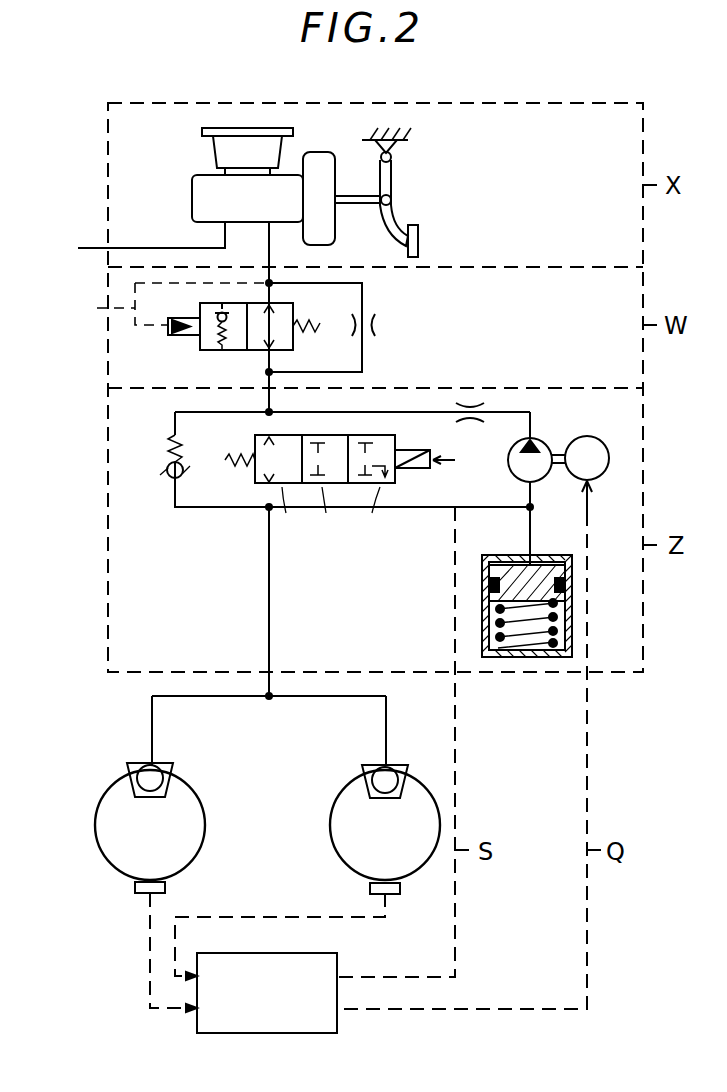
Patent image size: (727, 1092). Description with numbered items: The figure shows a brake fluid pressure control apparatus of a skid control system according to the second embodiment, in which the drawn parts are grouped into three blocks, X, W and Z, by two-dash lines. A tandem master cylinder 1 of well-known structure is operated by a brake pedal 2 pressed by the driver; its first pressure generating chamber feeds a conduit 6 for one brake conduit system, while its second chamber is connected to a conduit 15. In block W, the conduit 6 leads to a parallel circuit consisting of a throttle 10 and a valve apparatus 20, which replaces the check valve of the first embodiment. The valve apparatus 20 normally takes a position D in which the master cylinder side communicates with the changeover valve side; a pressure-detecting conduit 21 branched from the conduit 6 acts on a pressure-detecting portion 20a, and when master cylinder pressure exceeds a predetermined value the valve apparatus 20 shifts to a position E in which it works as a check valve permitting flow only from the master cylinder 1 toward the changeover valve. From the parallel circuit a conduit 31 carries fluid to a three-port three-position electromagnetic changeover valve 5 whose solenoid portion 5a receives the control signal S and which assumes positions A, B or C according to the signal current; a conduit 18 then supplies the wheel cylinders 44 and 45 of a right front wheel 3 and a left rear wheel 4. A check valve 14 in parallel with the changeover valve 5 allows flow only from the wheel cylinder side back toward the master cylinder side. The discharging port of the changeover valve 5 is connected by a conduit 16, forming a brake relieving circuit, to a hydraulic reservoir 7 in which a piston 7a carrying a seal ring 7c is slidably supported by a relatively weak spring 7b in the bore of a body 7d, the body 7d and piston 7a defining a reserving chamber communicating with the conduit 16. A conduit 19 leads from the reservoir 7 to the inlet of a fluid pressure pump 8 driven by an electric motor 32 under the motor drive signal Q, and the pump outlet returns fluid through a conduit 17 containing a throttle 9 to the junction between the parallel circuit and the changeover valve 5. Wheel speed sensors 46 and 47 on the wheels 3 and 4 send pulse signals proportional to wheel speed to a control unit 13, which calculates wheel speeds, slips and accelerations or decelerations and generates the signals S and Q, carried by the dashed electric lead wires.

The tandem master cylinder 1 is at (200, 182).
The brake pedal 2 is at (420, 237).
The right front wheel 3 is at (195, 822).
The left rear wheel 4 is at (342, 822).
The three-port three-position electromagnetic changeover valve 5 is at (227, 438).
The solenoid portion 5a is at (425, 466).
The conduit 6 is at (268, 242).
The hydraulic reservoir 7 is at (552, 603).
The piston 7a is at (504, 573).
The spring 7b is at (558, 622).
The seal ring 7c is at (567, 585).
The body 7d is at (530, 658).
The fluid pressure pump 8 is at (536, 440).
The throttle 9 is at (470, 398).
The throttle 10 is at (372, 325).
The control unit 13 is at (263, 946).
The check valve 14 is at (167, 473).
The conduit 15 is at (138, 258).
The conduit 16 is at (408, 508).
The conduit 17 is at (405, 398).
The conduit 18 is at (268, 610).
The conduit 19 is at (528, 498).
The valve apparatus 20 is at (304, 315).
The pressure-detecting portion 20a is at (182, 336).
The pressure-detecting conduit 21 is at (169, 304).
The conduit 31 is at (268, 428).
The electric motor 32 is at (594, 440).
The wheel cylinder 44 is at (178, 772).
The wheel cylinder 45 is at (393, 776).
The wheel speed sensor 46 is at (165, 888).
The wheel speed sensor 47 is at (400, 889).